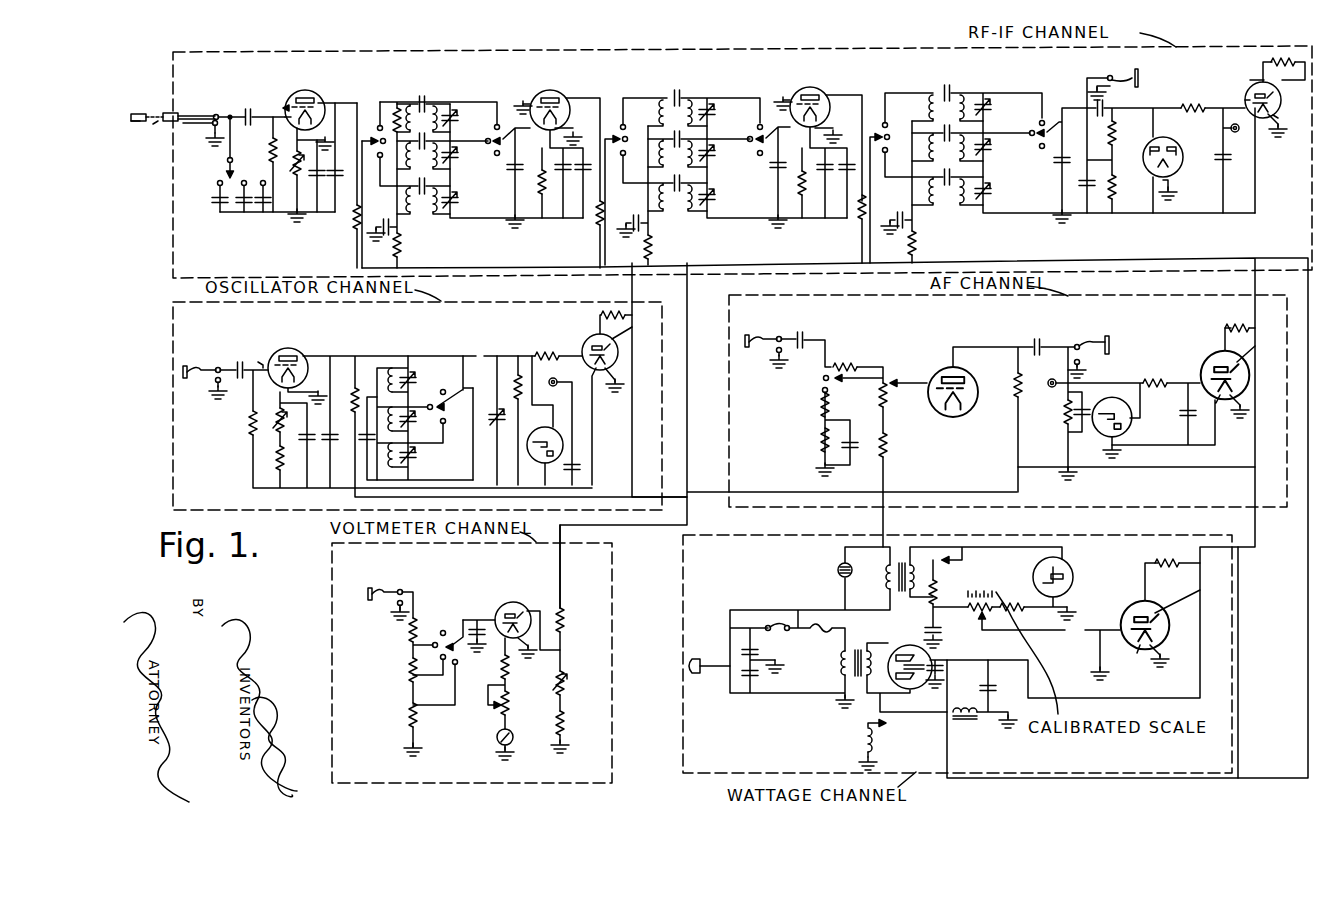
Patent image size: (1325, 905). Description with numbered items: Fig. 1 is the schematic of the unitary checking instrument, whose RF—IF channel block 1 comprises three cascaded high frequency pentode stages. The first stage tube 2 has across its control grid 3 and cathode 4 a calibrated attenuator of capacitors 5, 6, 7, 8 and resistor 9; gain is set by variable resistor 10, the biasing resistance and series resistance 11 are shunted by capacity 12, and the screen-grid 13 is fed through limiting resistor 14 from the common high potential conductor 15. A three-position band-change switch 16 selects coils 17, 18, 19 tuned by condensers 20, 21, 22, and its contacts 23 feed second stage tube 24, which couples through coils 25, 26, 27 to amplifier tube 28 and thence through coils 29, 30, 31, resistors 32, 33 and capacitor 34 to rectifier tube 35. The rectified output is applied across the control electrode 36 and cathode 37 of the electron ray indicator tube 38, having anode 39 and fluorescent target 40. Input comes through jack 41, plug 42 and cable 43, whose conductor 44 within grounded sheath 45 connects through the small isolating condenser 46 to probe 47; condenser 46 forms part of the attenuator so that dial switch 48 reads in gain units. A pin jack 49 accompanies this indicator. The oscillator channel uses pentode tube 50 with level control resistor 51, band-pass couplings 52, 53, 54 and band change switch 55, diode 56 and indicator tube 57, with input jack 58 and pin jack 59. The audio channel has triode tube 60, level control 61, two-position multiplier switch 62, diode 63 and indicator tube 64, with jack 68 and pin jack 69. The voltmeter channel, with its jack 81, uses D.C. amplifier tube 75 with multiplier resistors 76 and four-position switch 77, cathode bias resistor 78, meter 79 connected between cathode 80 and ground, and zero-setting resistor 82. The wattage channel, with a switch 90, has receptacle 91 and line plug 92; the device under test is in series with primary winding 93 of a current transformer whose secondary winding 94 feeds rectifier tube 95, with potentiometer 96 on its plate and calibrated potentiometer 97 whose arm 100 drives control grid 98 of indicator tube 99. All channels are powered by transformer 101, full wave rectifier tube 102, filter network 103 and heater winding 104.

The RF-IF channel 1 is at (240, 52).
The first stage tube 2 is at (311, 92).
The control grid 3 is at (326, 108).
The cathode 4 is at (297, 120).
The capacitor 5 is at (214, 199).
The capacitor 6 is at (237, 207).
The capacitor 7 is at (258, 208).
The capacitor 8 is at (248, 110).
The resistor 9 is at (269, 152).
The variable resistor 10 is at (296, 163).
The series resistance 11 is at (283, 202).
The capacity 12 is at (316, 177).
The screen-grid 13 is at (290, 106).
The limiting resistor 14 is at (352, 223).
The common high potential D.C. conductor 15 is at (428, 268).
The three-position band-change switch 16 is at (376, 137).
The coils 17 is at (424, 104).
The coils 18 is at (442, 151).
The coils 19 is at (419, 214).
The tuning condenser 20 is at (457, 112).
The tuning condenser 21 is at (452, 160).
The tuning condenser 22 is at (452, 209).
The set of three contacts 23 is at (519, 140).
The second stage tube 24 is at (552, 91).
The band-pass coupling coils 25 is at (685, 106).
The band-pass coupling coils 26 is at (699, 149).
The band-pass coupling coils 27 is at (679, 213).
The amplifier tube 28 is at (812, 88).
The coupling coils 29 is at (949, 97).
The coupling coils 30 is at (971, 143).
The coupling coils 31 is at (947, 210).
The resistor 32 is at (1117, 135).
The resistor 33 is at (1117, 187).
The capacitor 34 is at (1108, 102).
The rectifier tube 35 is at (1162, 143).
The control electrode 36 is at (1280, 94).
The cathode 37 is at (1278, 110).
The electron ray indicator tube 38 is at (1246, 102).
The anode 39 is at (1258, 86).
The fluorescent target 40 is at (1280, 64).
The jack 41 is at (192, 114).
The plug 42 is at (199, 125).
The connecting cable 43 is at (158, 126).
The conductor 44 is at (167, 113).
The sheath 45 is at (146, 122).
The condenser 46 is at (148, 114).
The probe 47 is at (131, 113).
The dial switch 48 is at (228, 158).
The pin jack 49 is at (1232, 130).
The pentode-tube 50 is at (295, 351).
The variable control resistor 51 is at (278, 413).
The band-pass coupling 52 is at (381, 365).
The band-pass coupling 53 is at (381, 402).
The band-pass coupling 54 is at (454, 456).
The band change switch 55 is at (439, 391).
The diode 56 is at (539, 454).
The electron ray indicator tube 57 is at (584, 344).
The jack 58 is at (203, 367).
The pin jack 59 is at (555, 373).
The triode tube 60 is at (972, 377).
The adjustable level control 61 is at (887, 373).
The two-position switch 62 is at (834, 367).
The diode 63 is at (1098, 433).
The electric eye indicator tube 64 is at (1205, 356).
The jack 68 is at (762, 342).
The pin jack 69 is at (1049, 386).
The D.C. amplifier tube 75 is at (504, 602).
The multiplier resistors 76 is at (411, 706).
The four-position switch 77 is at (442, 629).
The resistor 78 is at (502, 663).
The voltmeter instrument 79 is at (497, 737).
The cathode 80 is at (527, 612).
The input jack 81 is at (377, 594).
The adjustable resistor 82 is at (555, 680).
The power switch 90 is at (779, 621).
The receptacle 91 is at (837, 567).
The line plug 92 is at (694, 658).
The primary winding 93 is at (885, 577).
The secondary winding 94 is at (922, 601).
The current rectifier tube 95 is at (1067, 573).
The potentiometer resistance 96 is at (938, 571).
The calibrated potentiometer resistances 97 is at (1023, 611).
The control grid 98 is at (1159, 629).
The indicator tube 99 is at (1148, 601).
The adjustable arm 100 is at (978, 617).
The power supply transformer 101 is at (858, 642).
The full wave rectifier tube 102 is at (940, 662).
The filter network 103 is at (964, 681).
The transformer winding 104 is at (858, 744).